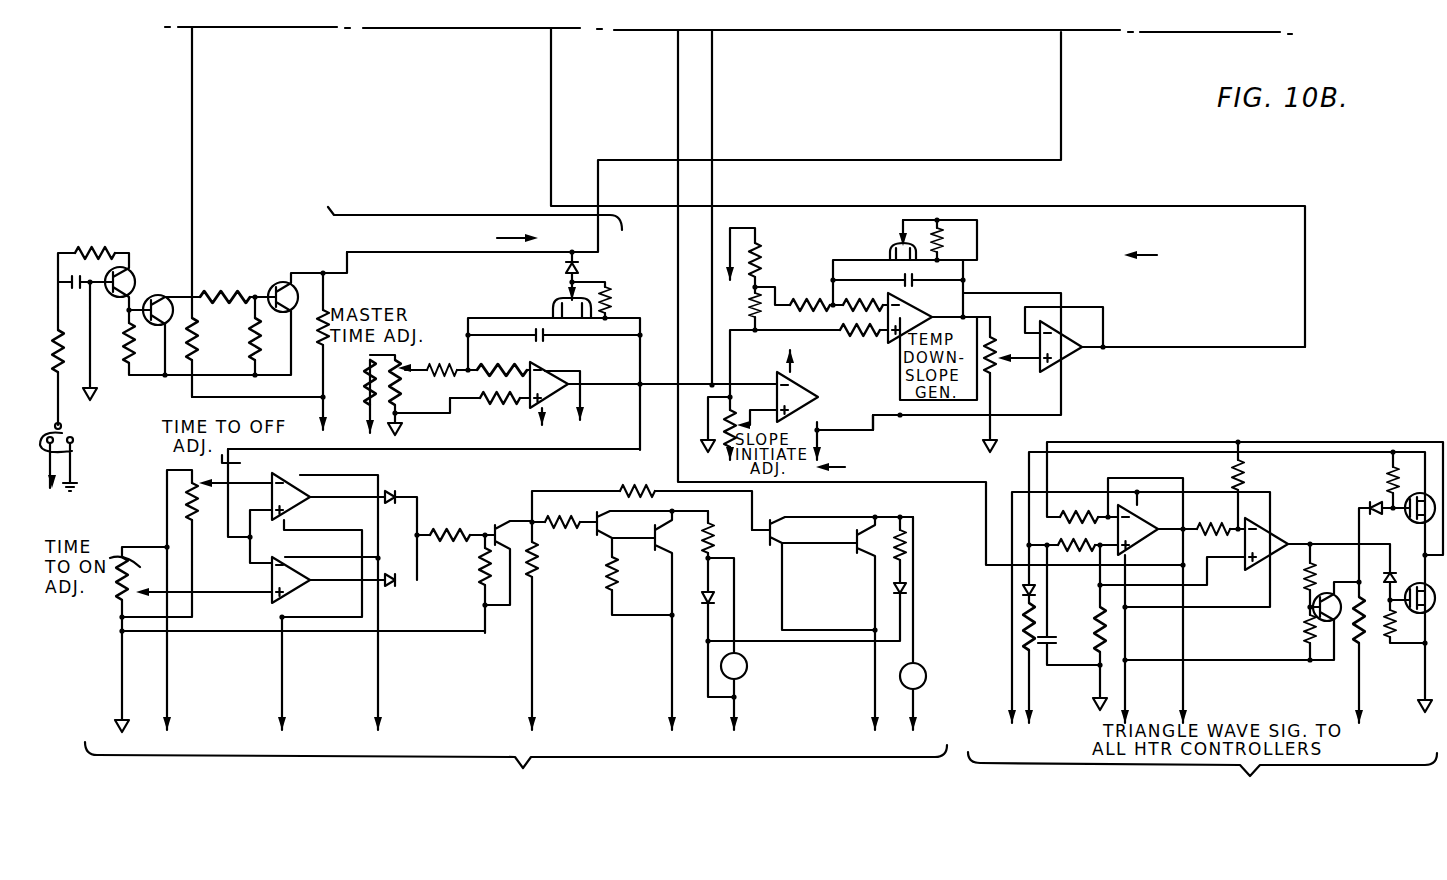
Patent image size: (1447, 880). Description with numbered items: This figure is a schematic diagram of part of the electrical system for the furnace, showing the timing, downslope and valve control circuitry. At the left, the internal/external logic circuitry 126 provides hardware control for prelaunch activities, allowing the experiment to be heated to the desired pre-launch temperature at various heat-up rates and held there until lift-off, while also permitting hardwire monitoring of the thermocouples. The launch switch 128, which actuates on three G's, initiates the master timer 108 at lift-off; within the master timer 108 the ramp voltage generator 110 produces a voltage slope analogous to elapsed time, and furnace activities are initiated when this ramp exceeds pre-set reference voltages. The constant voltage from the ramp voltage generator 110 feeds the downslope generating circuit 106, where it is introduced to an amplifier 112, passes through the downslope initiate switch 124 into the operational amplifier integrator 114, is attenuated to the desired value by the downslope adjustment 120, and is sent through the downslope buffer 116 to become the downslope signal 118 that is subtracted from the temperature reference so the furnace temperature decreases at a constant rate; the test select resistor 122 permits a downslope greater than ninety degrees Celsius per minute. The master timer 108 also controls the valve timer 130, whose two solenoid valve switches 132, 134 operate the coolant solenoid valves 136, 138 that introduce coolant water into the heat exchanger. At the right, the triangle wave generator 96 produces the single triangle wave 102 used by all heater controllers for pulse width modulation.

The triangle wave generator circuitry 96 is at (1202, 782).
The triangle wave 102 is at (902, 464).
The downslope generating circuit 106 is at (1145, 200).
The master timer 108 is at (421, 215).
The ramp voltage generator 110 is at (531, 349).
The amplifier 112 is at (795, 391).
The operational amplifier integrator 114 is at (911, 313).
The downslope buffer 116 is at (1071, 354).
The downslope signal 118 is at (1205, 264).
The downslope adjustment 120 is at (1028, 374).
The test select resistor 122 is at (757, 243).
The downslope initiate switch 124 is at (888, 252).
The internal/external logic circuitry 126 is at (328, 207).
The launch switch 128 is at (74, 432).
The valve timer 130 is at (516, 774).
The solenoid valve switch 132 is at (605, 522).
The solenoid valve switch 134 is at (832, 622).
The coolant solenoid valve 136 is at (742, 657).
The coolant solenoid valve 138 is at (922, 685).